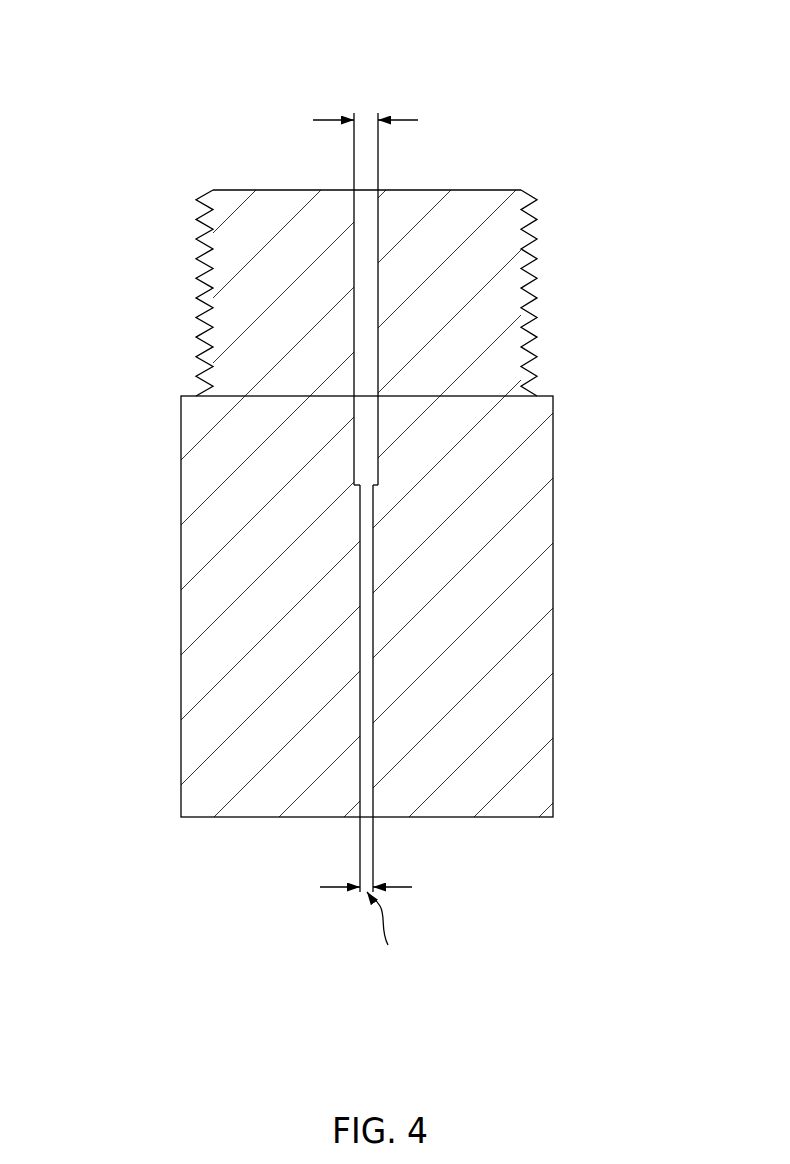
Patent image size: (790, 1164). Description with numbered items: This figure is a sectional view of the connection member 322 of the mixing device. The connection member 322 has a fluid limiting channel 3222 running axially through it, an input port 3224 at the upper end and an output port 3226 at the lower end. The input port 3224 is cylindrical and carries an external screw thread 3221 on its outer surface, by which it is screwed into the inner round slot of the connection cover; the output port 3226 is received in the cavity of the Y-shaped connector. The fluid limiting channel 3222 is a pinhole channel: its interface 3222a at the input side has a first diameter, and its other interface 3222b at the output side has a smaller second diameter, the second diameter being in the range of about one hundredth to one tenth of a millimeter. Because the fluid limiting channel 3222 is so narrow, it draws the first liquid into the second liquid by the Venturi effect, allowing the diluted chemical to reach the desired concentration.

The connection member 322 is at (138, 82).
The external screw thread 3221 is at (197, 277).
The fluid limiting channel 3222 is at (360, 592).
The interface 3222a is at (363, 200).
The other interface 3222b is at (364, 820).
The input port 3224 is at (480, 257).
The output port 3226 is at (477, 636).